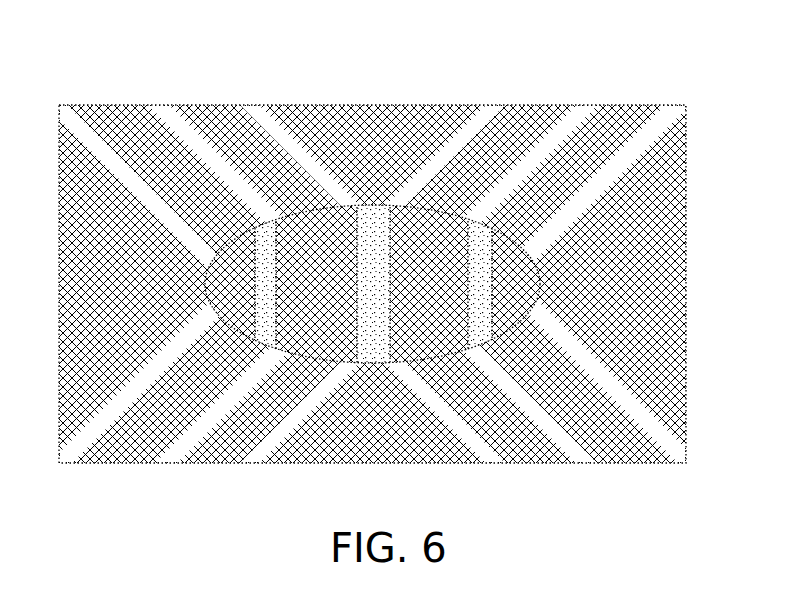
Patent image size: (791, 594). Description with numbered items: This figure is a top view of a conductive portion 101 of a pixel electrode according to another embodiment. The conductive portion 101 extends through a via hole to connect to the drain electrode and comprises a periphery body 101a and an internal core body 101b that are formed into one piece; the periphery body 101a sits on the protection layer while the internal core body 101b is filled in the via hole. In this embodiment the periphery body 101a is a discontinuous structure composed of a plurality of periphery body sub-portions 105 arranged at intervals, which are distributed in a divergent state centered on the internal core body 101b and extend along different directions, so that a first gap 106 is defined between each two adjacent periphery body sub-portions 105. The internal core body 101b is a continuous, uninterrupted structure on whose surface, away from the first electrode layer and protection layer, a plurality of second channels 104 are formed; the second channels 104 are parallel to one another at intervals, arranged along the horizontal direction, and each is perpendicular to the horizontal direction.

The conductive portion 101 is at (90, 68).
The periphery body 101a is at (641, 158).
The internal core body 101b is at (541, 288).
The second channels 104 is at (542, 322).
The periphery body sub-portions 105 is at (498, 268).
The first gap 106 is at (612, 186).